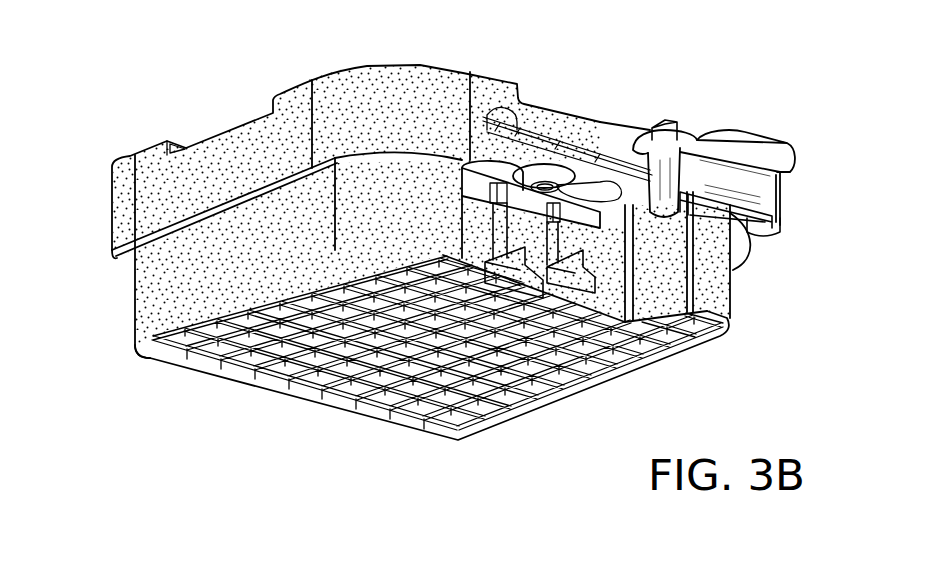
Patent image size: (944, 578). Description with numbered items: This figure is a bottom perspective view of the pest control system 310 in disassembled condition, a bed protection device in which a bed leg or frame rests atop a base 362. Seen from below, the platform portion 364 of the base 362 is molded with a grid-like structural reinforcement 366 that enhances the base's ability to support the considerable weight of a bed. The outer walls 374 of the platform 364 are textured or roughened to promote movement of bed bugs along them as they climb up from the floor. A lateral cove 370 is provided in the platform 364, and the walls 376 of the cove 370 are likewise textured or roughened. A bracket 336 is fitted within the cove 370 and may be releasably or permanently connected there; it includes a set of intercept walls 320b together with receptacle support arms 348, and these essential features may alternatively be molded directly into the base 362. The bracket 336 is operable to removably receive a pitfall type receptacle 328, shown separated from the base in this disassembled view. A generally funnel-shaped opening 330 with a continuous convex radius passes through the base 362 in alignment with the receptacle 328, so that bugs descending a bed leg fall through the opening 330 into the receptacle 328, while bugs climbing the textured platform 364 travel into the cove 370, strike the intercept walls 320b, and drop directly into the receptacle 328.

The pest control system 310 is at (262, 50).
The base 362 is at (108, 167).
The outer walls 374 is at (227, 235).
The platform portion 364 is at (196, 277).
The walls of cove 376 is at (665, 292).
The grid-like structural reinforcement 366 is at (322, 353).
The lateral cove 370 is at (590, 308).
The bracket 336 is at (517, 297).
The receptacle support arms 348 is at (577, 270).
The funnel-shaped opening 330 is at (553, 172).
The intercept walls 320b is at (537, 188).
The pitfall type receptacle 328 is at (790, 198).